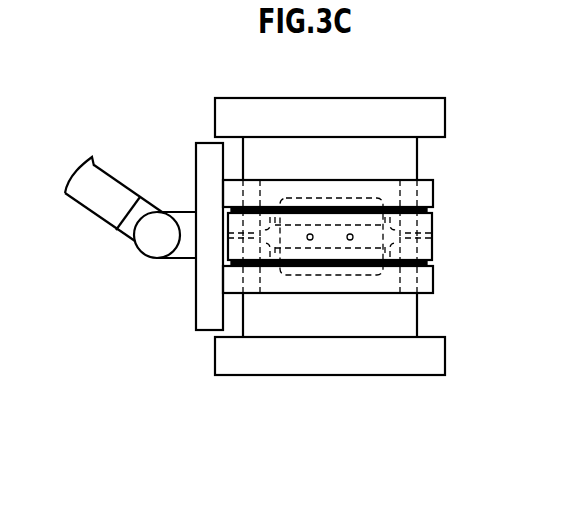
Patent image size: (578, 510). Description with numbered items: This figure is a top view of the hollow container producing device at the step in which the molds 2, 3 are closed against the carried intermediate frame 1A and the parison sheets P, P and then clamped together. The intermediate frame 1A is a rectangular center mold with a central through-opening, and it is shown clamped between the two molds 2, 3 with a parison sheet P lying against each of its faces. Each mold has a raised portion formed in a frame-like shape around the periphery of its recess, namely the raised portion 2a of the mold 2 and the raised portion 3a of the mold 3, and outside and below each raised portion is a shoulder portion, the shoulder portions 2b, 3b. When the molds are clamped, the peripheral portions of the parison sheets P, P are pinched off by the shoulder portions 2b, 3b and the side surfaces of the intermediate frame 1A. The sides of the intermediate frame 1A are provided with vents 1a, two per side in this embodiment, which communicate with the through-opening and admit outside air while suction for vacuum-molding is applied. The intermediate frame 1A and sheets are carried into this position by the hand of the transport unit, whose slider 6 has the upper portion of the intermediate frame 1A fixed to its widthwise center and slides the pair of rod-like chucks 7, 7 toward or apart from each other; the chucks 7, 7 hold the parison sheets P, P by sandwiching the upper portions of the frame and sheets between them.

The intermediate frame 1A is at (434, 227).
The vent 1a is at (310, 234).
The mold 2 is at (324, 322).
The raised portion 2a is at (260, 278).
The shoulder portion 2b is at (235, 268).
The mold 3 is at (330, 158).
The raised portion 3a is at (260, 180).
The shoulder portion 3b is at (240, 186).
The slider 6 is at (196, 153).
The chuck 7 is at (434, 192).
The parison sheet P is at (428, 210).